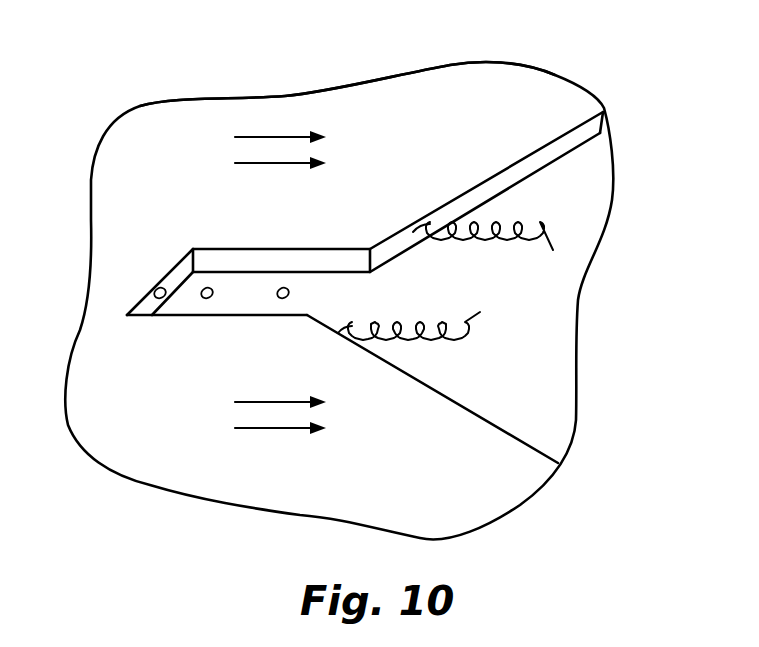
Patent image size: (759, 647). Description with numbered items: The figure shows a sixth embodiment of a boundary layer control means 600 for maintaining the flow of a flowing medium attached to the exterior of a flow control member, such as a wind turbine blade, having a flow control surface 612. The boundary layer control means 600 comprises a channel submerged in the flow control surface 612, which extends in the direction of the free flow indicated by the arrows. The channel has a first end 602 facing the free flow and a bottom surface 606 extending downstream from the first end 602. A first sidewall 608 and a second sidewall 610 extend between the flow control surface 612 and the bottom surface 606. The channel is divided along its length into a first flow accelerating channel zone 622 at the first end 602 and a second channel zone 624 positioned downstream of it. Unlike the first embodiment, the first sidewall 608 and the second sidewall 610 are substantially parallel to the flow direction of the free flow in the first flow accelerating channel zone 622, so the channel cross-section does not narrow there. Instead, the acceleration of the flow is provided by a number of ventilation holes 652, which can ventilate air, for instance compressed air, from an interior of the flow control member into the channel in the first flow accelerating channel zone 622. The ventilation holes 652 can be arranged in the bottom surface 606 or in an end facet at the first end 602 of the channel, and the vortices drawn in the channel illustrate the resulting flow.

The boundary layer control means 600 is at (595, 357).
The first end 602 is at (146, 308).
The bottom surface 606 is at (520, 380).
The first sidewall 608 is at (498, 180).
The second sidewall 610 is at (520, 436).
The flow control surface 612 is at (285, 108).
The first flow accelerating channel zone 622 is at (370, 235).
The second channel zone 624 is at (603, 108).
The ventilation holes 652 is at (165, 298).